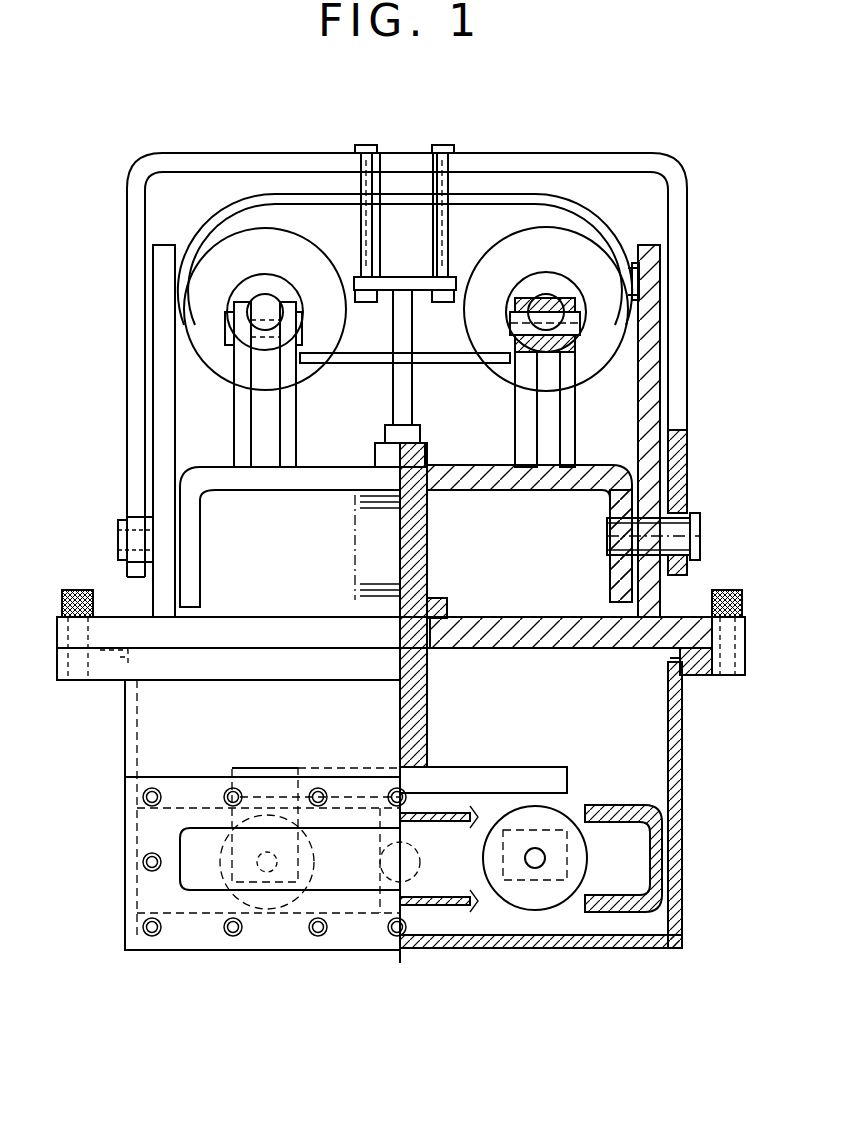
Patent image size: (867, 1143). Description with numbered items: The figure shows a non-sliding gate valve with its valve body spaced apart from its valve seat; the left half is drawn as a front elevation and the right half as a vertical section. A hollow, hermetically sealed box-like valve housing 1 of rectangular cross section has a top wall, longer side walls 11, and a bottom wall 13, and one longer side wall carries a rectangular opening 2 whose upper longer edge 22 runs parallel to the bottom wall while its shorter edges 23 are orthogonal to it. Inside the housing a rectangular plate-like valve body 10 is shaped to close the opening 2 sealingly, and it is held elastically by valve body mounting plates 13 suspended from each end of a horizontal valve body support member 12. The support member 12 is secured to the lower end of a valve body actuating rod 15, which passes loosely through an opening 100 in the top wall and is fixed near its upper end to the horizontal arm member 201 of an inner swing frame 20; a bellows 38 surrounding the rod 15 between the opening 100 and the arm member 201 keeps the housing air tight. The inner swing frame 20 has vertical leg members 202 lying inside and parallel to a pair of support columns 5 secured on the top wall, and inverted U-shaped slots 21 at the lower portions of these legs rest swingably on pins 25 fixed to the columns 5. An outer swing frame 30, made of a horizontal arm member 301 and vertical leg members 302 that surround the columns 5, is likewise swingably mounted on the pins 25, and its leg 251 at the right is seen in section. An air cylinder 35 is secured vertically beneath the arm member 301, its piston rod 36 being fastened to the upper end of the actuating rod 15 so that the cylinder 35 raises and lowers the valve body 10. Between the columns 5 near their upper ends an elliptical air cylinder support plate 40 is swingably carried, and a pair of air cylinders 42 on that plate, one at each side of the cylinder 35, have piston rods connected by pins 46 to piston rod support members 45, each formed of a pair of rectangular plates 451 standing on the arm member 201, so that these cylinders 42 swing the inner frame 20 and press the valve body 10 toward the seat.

The valve housing 1 is at (692, 748).
The rectangular opening 2 is at (188, 873).
The support columns 5 is at (655, 372).
The valve body 10 is at (505, 612).
The longer side walls 11 is at (640, 712).
The valve body support member 12 is at (122, 755).
The valve body mounting plates 13 is at (600, 950).
The valve body actuating rod 15 is at (430, 735).
The inner swing frame 20 is at (363, 463).
The inverted U-shaped slots 21 is at (608, 572).
The longer edge of the opening 22 is at (202, 835).
The shorter edges of the opening 23 is at (185, 886).
The pins 25 is at (118, 530).
The outer swing frame 30 is at (242, 150).
The air cylinder 35 is at (415, 185).
The piston rod 36 is at (402, 380).
The bellows 38 is at (445, 542).
The air cylinder support plate 40 is at (545, 197).
The air cylinders 42 is at (318, 355).
The piston rod support members 45 is at (300, 415).
The pins 46 is at (303, 318).
The opening in the top wall 100 is at (443, 635).
The horizontal arm member 201 is at (332, 482).
The vertical leg members 202 is at (205, 583).
The frame right tube 251 is at (673, 452).
The horizontal arm member 301 is at (293, 157).
The vertical leg members 302 is at (135, 432).
The rectangular plates 451 is at (515, 422).